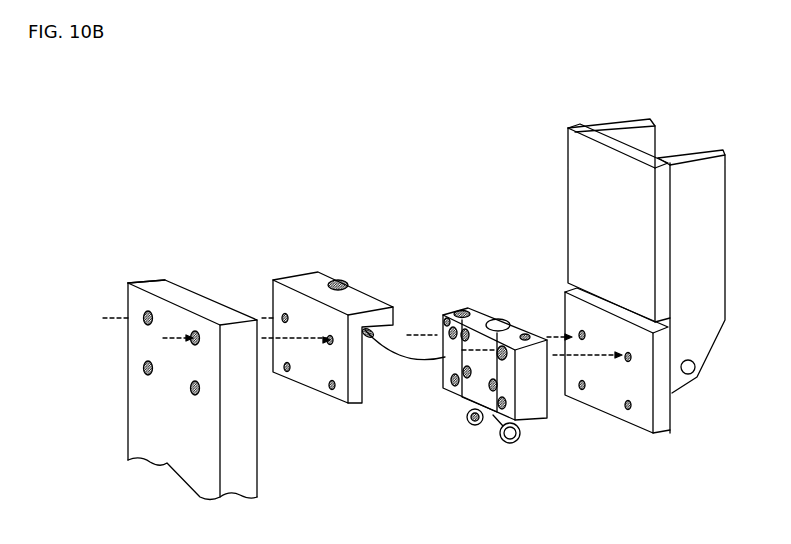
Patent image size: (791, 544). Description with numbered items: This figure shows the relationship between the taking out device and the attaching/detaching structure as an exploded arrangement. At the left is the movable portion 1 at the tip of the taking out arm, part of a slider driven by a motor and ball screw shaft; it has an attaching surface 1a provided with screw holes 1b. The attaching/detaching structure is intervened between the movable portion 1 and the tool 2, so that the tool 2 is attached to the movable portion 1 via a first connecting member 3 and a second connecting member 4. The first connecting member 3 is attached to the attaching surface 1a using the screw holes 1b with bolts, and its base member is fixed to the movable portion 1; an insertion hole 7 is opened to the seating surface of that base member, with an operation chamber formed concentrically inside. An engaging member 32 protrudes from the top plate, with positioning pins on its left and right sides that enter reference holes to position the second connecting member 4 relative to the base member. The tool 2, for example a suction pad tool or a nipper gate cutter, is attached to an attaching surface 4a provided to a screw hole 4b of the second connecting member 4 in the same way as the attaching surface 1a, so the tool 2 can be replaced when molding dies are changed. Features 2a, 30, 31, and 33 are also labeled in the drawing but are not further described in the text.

The movable portion 1 is at (626, 296).
The attaching surface 1a is at (595, 400).
The screw holes 1b is at (628, 410).
The tool 2 is at (192, 370).
The edge of base plate 2a is at (130, 282).
The first connecting member 3 is at (479, 343).
The upper bore of connector block 30 is at (467, 300).
The side bore of connector block 31 is at (441, 322).
The engaging member 32 is at (523, 324).
The locking pin 33 is at (372, 340).
The second connecting member 4 is at (333, 338).
The attaching surface 4a is at (297, 382).
The screw hole 4b is at (335, 400).
The insertion hole 7 is at (500, 320).